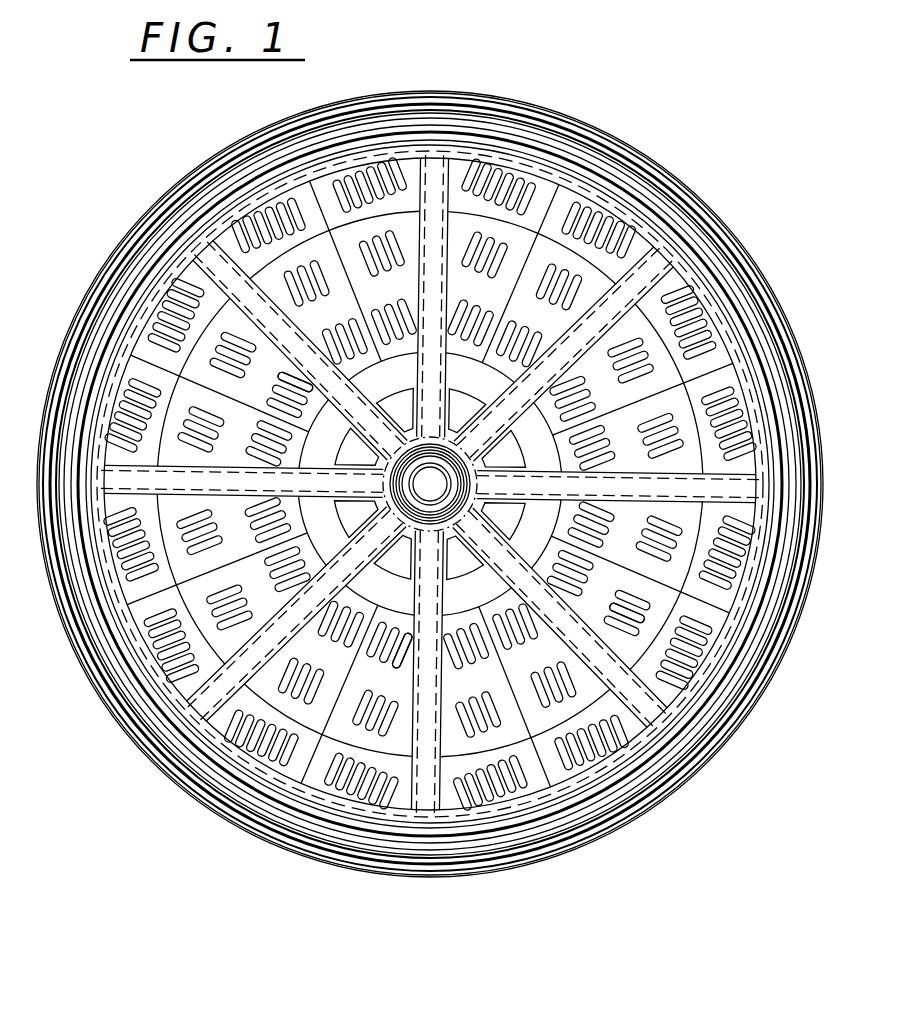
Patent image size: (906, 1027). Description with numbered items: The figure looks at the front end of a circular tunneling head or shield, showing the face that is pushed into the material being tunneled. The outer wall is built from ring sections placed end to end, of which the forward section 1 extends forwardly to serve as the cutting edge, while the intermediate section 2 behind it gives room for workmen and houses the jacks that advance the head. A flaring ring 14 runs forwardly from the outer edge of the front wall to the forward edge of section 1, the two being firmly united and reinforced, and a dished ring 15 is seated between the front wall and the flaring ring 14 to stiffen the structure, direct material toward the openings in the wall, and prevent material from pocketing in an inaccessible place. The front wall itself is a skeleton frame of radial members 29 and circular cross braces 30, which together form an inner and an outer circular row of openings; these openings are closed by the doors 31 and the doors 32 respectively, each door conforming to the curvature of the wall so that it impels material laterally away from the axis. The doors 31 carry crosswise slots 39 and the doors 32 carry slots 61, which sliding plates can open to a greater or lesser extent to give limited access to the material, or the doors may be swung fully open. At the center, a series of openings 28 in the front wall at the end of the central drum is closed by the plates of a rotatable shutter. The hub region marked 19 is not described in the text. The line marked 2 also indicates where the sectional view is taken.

The section 1 is at (213, 801).
The intermediate section 2 is at (416, 76).
The flaring ring 14 is at (650, 778).
The dished ring 15 is at (577, 792).
The central hub 19 is at (434, 478).
The openings 28 is at (510, 457).
The radial members 29 is at (429, 483).
The circular cross braces 30 is at (168, 380).
The doors 31 is at (140, 345).
The doors 32 is at (290, 382).
The slots 39 is at (547, 776).
The slots 61 is at (618, 604).